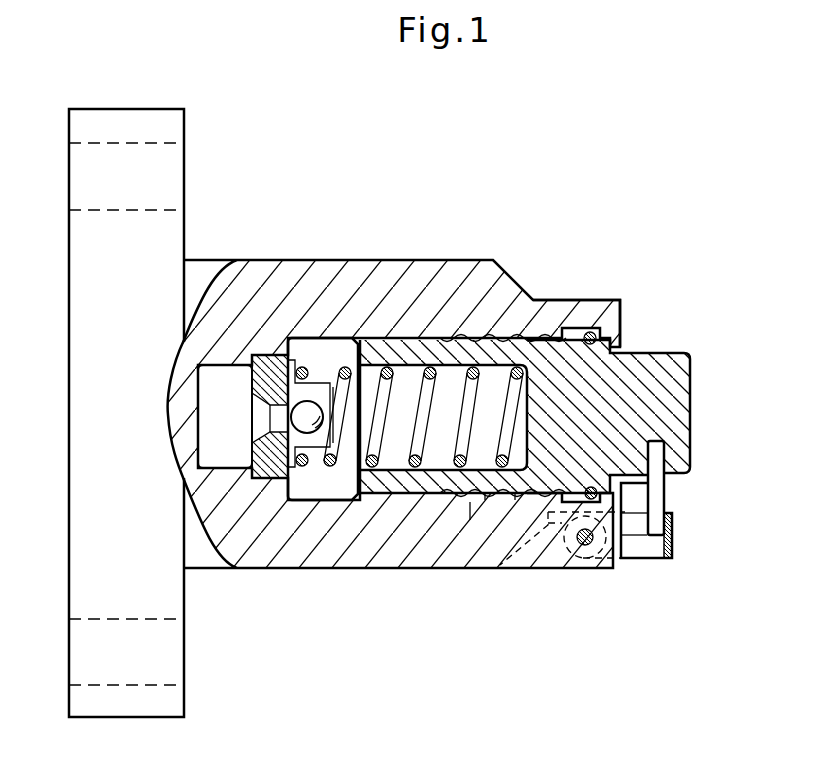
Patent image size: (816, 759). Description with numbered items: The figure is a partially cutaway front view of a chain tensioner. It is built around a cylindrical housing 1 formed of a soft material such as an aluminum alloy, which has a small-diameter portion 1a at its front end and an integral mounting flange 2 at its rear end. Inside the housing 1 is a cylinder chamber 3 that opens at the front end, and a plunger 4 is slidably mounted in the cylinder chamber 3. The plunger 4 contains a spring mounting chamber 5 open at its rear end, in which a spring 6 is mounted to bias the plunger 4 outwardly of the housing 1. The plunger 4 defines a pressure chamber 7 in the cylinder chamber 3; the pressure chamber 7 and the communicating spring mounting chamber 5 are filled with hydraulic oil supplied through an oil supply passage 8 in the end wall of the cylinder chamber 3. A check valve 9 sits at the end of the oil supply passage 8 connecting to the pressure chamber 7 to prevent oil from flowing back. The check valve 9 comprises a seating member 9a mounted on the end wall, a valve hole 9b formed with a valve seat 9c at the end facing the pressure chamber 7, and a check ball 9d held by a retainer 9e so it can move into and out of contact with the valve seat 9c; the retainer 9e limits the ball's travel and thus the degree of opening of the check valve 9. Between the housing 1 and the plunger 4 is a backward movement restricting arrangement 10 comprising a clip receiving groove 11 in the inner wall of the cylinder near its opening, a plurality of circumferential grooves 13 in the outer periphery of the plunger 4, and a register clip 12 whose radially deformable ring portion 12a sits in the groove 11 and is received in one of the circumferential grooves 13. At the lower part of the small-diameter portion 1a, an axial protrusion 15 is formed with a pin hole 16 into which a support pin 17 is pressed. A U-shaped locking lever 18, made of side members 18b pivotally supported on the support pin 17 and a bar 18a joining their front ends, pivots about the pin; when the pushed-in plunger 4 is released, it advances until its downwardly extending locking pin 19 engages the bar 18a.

The cylindrical housing 1 is at (272, 258).
The small-diameter portion 1a is at (598, 305).
The mounting flange 2 is at (140, 112).
The cylinder chamber 3 is at (392, 338).
The plunger 4 is at (480, 347).
The spring mounting chamber 5 is at (507, 350).
The spring 6 is at (530, 350).
The pressure chamber 7 is at (323, 347).
The oil supply passage 8 is at (213, 423).
The check valve 9 is at (262, 488).
The seating member 9a is at (275, 490).
The valve hole 9b is at (268, 406).
The valve seat 9c is at (313, 435).
The check ball 9d is at (300, 418).
The retainer 9e is at (332, 458).
The backward movement restricting arrangement 10 is at (477, 500).
The clip receiving groove 11 is at (560, 505).
The register clip 12 is at (603, 326).
The ring portion 12a is at (600, 497).
The circumferential grooves 13 is at (515, 496).
The axial protrusion 15 is at (548, 508).
The pin hole 16 is at (590, 530).
The support pin 17 is at (593, 543).
The locking lever 18 is at (677, 542).
The bar 18a is at (675, 553).
The side members 18b is at (652, 550).
The locking pin 19 is at (664, 490).